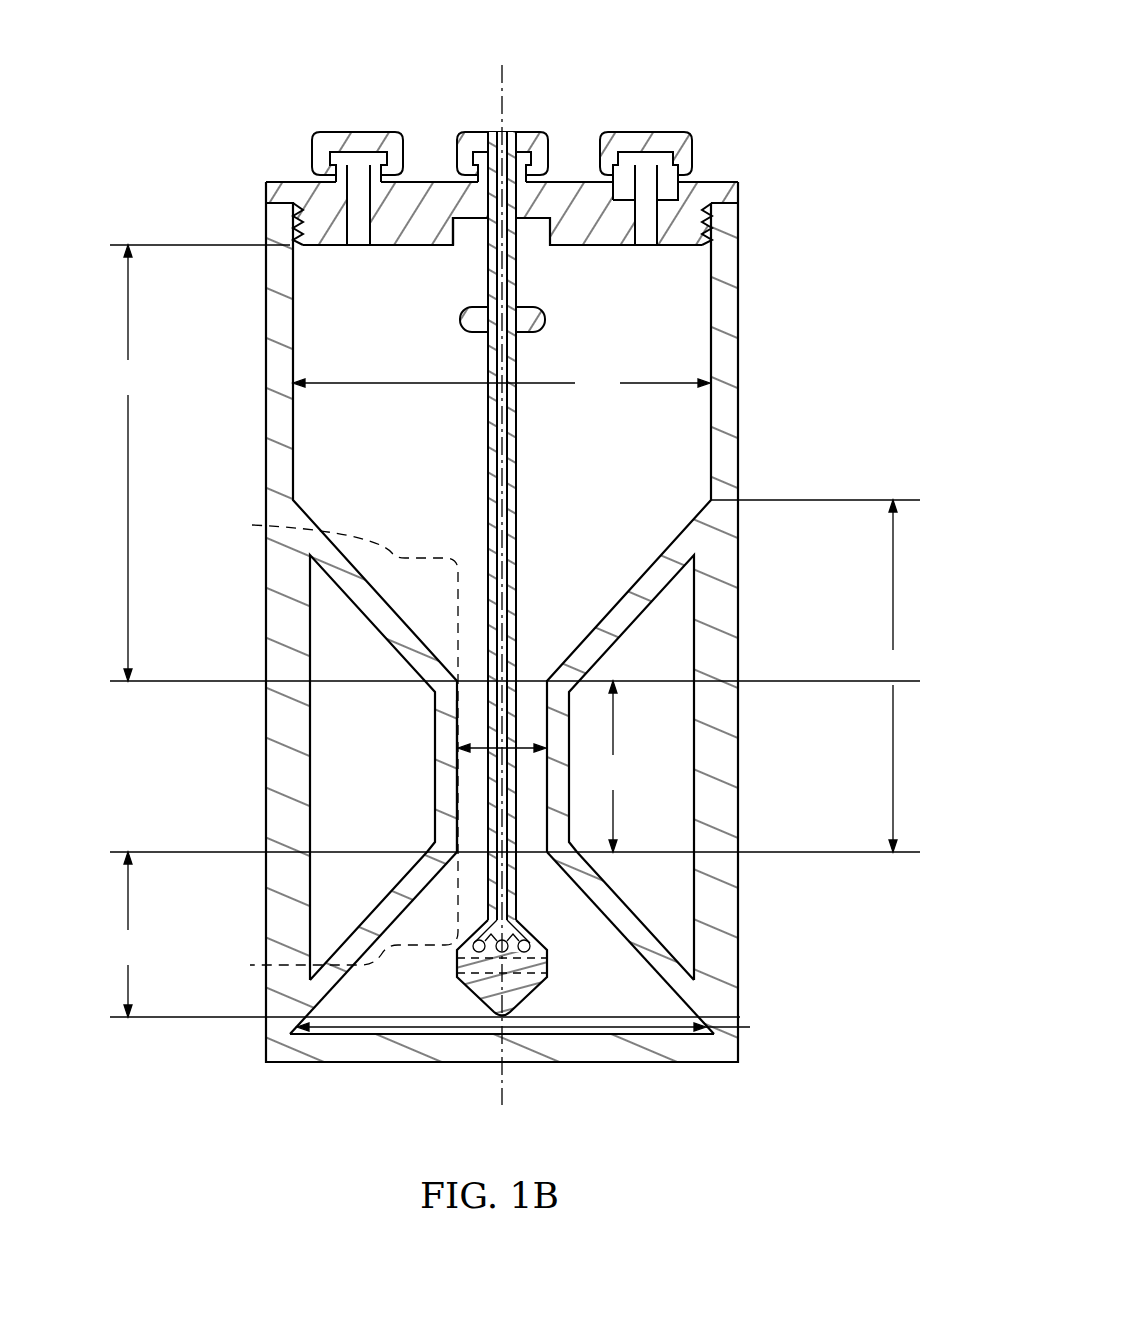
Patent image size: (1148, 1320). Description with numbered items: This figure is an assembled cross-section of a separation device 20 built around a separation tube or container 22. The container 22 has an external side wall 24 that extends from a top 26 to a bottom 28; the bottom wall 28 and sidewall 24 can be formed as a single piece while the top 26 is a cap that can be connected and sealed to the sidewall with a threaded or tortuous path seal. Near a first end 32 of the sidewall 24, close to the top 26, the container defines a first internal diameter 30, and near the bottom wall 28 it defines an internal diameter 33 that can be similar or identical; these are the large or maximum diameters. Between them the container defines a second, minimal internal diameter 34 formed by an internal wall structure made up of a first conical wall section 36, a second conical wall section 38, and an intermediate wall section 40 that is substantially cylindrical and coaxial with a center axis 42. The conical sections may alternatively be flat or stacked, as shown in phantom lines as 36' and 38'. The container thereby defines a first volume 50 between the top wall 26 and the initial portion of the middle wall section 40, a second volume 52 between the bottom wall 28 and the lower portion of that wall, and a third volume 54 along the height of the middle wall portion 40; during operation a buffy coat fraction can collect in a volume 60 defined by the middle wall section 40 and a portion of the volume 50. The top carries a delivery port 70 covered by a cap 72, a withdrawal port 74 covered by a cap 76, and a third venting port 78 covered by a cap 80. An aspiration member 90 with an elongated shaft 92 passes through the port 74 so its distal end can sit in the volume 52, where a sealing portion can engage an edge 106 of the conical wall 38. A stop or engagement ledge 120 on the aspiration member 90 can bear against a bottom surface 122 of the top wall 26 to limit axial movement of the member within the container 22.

The separation device 20 is at (155, 178).
The separation tube or container 22 is at (742, 628).
The external or side wall 24 is at (722, 706).
The top 26 is at (550, 230).
The bottom 28 is at (655, 1055).
The first internal diameter 30 is at (501, 386).
The first end 32 is at (705, 218).
The internal diameter 33 is at (541, 1030).
The second internal diameter 34 is at (458, 748).
The first conical wall section 36 is at (317, 767).
The flat or stacked first wall section 36' is at (335, 738).
The second conical wall section 38 is at (323, 943).
The flat or stacked second wall section 38' is at (376, 956).
The intermediate wall section 40 is at (458, 816).
The center axis 42 is at (500, 95).
The first volume 50 is at (515, 463).
The second volume 52 is at (515, 934).
The third volume 54 is at (614, 766).
The collection volume 60 is at (816, 676).
The delivery or access port 70 is at (340, 162).
The cap 72 is at (378, 131).
The withdrawal or access port 74 is at (478, 162).
The cap 76 is at (518, 131).
The third port 78 is at (625, 162).
The cap 80 is at (665, 131).
The withdrawal or aspiration member 90 is at (613, 526).
The elongated shaft 92 is at (520, 415).
The edge of the conical wall 106 is at (458, 853).
The stop or engagement ledge 120 is at (540, 316).
The bottom surface of the top wall 122 is at (455, 228).